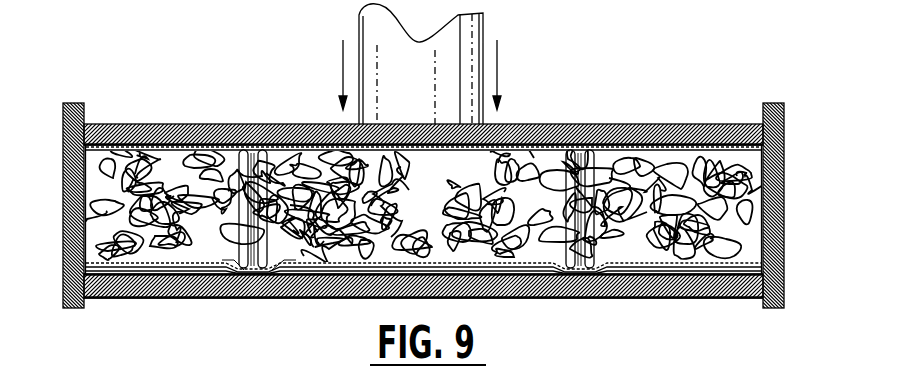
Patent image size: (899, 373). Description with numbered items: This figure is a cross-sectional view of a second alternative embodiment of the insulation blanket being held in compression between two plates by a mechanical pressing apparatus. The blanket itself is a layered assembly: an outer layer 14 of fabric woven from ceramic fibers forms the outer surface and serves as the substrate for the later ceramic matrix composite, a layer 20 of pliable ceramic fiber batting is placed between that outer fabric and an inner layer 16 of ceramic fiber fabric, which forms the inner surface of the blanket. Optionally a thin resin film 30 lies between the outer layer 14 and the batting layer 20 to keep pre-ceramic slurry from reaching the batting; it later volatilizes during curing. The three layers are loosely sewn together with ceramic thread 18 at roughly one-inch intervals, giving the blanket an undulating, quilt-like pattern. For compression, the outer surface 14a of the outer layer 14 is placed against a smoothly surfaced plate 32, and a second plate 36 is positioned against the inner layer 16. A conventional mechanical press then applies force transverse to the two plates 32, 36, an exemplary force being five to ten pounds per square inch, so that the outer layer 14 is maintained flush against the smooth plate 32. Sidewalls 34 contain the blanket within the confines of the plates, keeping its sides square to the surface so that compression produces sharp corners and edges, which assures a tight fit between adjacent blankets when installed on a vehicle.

The outer layer 14 is at (598, 268).
The outer surface of the outer layer 14a is at (258, 272).
The inner layer 16 is at (601, 157).
The ceramic thread 18 is at (260, 156).
The batting layer 20 is at (324, 153).
The resin film 30 is at (96, 249).
The smoothly surfaced plate 32 is at (490, 284).
The sidewalls 34 is at (70, 104).
The second plate 36 is at (678, 138).